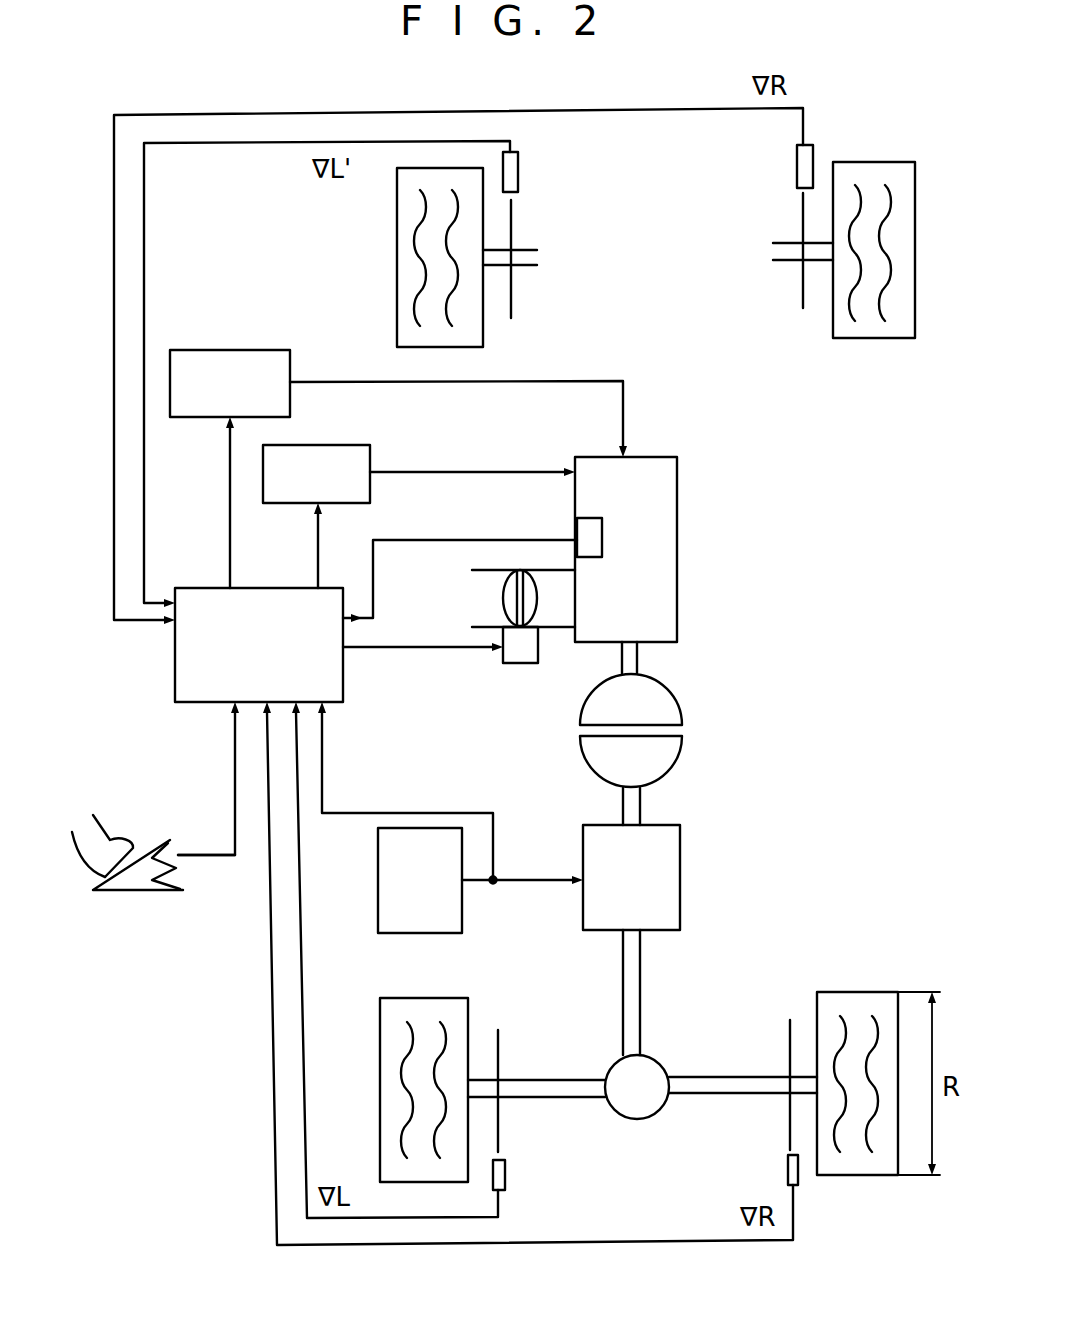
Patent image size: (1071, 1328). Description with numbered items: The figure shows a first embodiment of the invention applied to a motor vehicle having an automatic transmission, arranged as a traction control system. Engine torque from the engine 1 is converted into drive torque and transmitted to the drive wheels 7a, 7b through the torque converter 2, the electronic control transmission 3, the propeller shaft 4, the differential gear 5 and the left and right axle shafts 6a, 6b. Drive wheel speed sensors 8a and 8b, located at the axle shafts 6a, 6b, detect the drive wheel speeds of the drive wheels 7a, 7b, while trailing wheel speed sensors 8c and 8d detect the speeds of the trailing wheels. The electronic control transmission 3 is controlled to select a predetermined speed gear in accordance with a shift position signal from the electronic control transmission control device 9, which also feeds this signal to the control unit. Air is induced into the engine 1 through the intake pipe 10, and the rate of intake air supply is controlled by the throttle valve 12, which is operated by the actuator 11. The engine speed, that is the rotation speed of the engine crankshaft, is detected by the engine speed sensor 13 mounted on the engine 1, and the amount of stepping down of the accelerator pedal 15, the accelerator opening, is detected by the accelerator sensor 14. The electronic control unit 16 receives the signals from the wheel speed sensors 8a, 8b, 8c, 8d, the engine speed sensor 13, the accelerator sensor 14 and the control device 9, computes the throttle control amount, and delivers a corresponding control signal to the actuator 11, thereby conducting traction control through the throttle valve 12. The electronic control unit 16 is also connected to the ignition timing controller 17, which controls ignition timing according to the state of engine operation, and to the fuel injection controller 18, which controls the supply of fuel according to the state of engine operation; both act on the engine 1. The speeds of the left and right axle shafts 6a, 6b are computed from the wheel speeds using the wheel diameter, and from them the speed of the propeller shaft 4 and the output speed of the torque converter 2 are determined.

The engine 1 is at (678, 470).
The torque converter 2 is at (683, 712).
The electronic control transmission 3 is at (682, 842).
The propeller shaft 4 is at (643, 992).
The differential gear 5 is at (645, 1112).
The left axle shaft 6a is at (562, 1098).
The right axle shaft 6b is at (745, 1095).
The drive wheel 7a is at (468, 1005).
The drive wheel 7b is at (893, 990).
The drive wheel speed sensor 8a is at (505, 1180).
The drive wheel speed sensor 8b is at (798, 1180).
The trailing wheel speed sensor 8c is at (518, 162).
The trailing wheel speed sensor 8d is at (813, 153).
The electronic control transmission control device 9 is at (462, 912).
The intake pipe 10 is at (515, 600).
The actuator 11 is at (530, 663).
The throttle valve 12 is at (504, 591).
The engine speed sensor 13 is at (578, 528).
The accelerator sensor 14 is at (142, 878).
The accelerator pedal 15 is at (163, 838).
The electronic control unit 16 is at (175, 675).
The ignition timing controller 17 is at (370, 447).
The fuel injection controller 18 is at (290, 352).